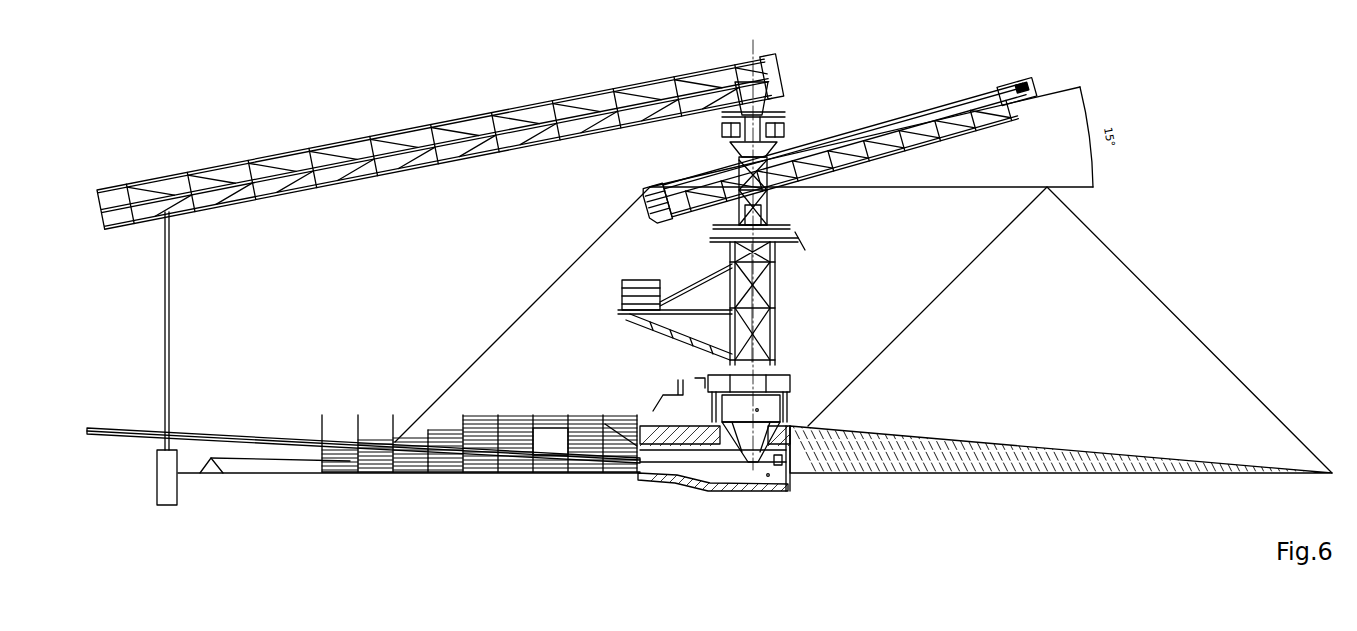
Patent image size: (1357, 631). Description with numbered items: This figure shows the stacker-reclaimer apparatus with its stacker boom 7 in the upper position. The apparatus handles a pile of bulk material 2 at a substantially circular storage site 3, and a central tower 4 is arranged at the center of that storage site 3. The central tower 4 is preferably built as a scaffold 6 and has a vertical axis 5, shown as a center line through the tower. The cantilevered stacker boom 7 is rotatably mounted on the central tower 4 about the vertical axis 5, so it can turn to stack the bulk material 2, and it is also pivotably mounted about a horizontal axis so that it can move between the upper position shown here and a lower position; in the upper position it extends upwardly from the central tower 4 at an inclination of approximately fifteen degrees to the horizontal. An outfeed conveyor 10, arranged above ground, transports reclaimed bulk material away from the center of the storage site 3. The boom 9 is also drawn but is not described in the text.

The pile of bulk material 2 is at (1070, 330).
The storage site 3 is at (1073, 381).
The central tower 4 is at (727, 252).
The vertical axis 5 is at (724, 479).
The scaffold 6 is at (719, 472).
The stacker boom 7 is at (841, 140).
The feed boom 9 is at (439, 130).
The outfeed conveyor 10 is at (349, 459).